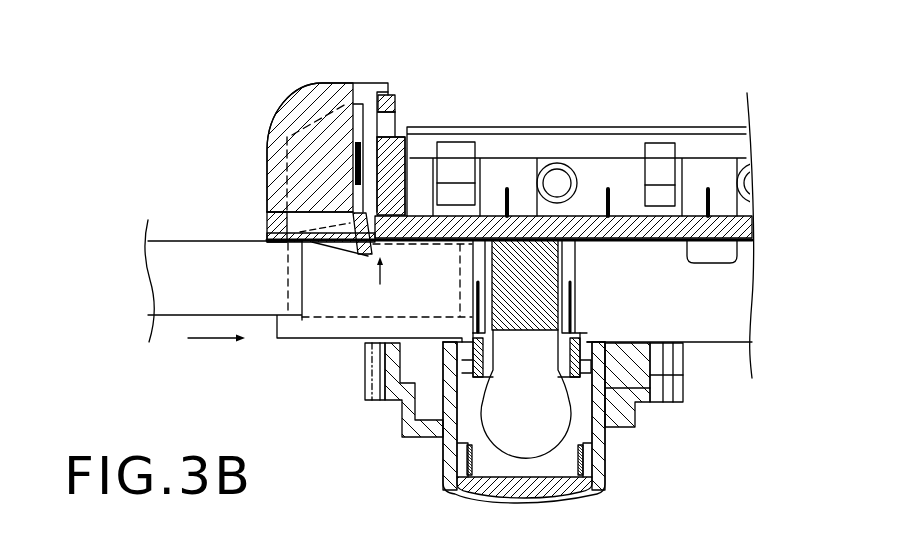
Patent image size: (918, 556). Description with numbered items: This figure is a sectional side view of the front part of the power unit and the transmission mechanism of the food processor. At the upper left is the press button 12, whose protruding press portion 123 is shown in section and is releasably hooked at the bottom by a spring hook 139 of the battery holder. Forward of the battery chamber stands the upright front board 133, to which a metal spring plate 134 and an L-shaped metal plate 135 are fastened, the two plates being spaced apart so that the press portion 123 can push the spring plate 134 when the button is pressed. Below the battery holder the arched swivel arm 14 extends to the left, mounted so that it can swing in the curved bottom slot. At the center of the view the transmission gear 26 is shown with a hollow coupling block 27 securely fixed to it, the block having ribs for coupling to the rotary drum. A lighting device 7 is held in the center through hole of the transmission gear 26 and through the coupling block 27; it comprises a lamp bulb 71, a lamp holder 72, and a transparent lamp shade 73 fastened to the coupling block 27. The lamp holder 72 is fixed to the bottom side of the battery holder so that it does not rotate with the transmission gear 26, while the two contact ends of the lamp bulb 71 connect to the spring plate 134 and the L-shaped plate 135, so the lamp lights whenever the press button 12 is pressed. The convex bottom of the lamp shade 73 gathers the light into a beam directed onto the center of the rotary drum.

The lighting device 7 is at (466, 411).
The press button 12 is at (281, 131).
The arched swivel arm 14 is at (172, 297).
The transmission gear 26 is at (684, 375).
The hollow coupling block 27 is at (608, 455).
The lamp bulb 71 is at (550, 408).
The lamp holder 72 is at (577, 303).
The transparent lamp shade 73 is at (562, 504).
The protruding press portion 123 is at (327, 130).
The upright front board 133 is at (410, 149).
The metal spring plate 134 is at (366, 103).
The L-shaped metal plate 135 is at (405, 143).
The spring hook 139 is at (364, 252).